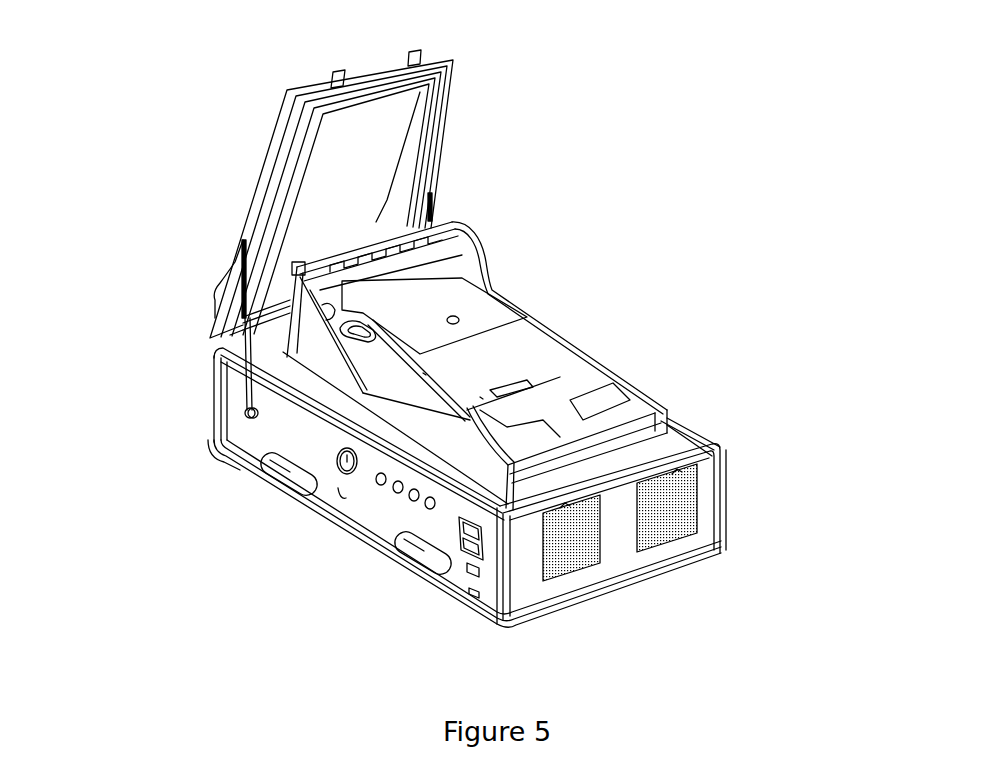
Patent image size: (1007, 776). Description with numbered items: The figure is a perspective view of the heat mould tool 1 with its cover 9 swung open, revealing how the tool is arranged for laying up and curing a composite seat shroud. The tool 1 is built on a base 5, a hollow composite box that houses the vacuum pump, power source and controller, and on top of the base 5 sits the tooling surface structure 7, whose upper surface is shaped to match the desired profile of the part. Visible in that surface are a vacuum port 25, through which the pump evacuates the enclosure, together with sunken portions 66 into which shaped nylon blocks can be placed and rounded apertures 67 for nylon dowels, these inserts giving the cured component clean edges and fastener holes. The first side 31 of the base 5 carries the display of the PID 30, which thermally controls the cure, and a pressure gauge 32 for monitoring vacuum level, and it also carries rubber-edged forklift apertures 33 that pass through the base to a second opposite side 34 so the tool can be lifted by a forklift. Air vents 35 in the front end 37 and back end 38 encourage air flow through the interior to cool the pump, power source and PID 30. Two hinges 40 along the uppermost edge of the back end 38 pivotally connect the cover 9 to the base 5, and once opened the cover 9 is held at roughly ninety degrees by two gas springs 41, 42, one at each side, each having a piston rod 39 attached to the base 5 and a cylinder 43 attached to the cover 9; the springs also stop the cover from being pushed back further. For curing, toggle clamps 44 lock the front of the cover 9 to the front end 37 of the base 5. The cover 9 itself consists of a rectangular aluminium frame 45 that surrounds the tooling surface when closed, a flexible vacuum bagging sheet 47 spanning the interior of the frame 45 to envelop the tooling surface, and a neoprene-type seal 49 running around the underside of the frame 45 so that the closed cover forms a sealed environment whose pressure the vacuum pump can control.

The tool 1 is at (197, 133).
The base 5 is at (546, 628).
The tooling surface structure 7 is at (603, 324).
The cover 9 is at (470, 52).
The vacuum port 25 is at (455, 318).
The PID 30 is at (470, 547).
The first side 31 is at (227, 447).
The pressure gauge 32 is at (343, 470).
The forklift apertures 33 is at (430, 558).
The second opposite side 34 is at (700, 430).
The air vents 35 is at (668, 537).
The front end 37 is at (710, 533).
The back end 38 is at (217, 373).
The piston rod 39 is at (247, 390).
The hinges 40 is at (277, 327).
The gas spring 41 is at (247, 323).
The gas spring 42 is at (435, 210).
The cylinder 43 is at (240, 267).
The toggle clamps 44 is at (413, 65).
The frame 45 is at (300, 90).
The vacuum bagging sheet 47 is at (397, 110).
The seal 49 is at (437, 118).
The sunken portions 66 is at (415, 270).
The rounded apertures 67 is at (535, 333).